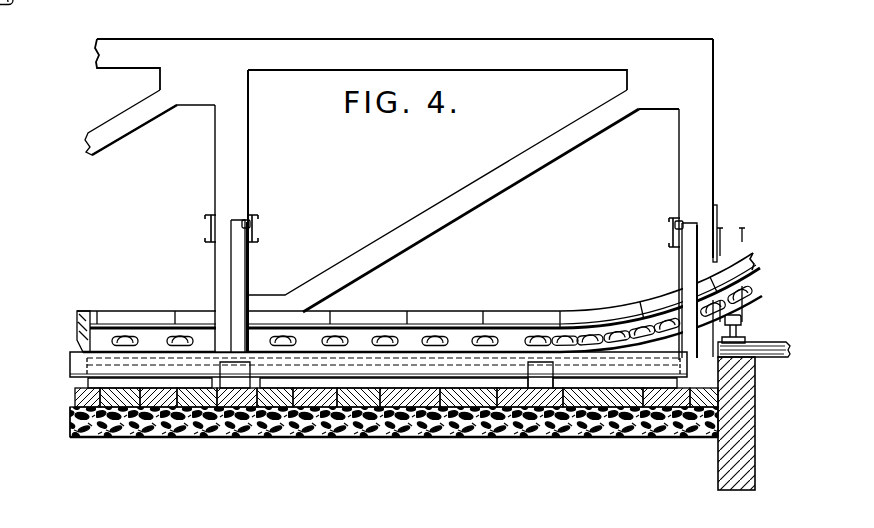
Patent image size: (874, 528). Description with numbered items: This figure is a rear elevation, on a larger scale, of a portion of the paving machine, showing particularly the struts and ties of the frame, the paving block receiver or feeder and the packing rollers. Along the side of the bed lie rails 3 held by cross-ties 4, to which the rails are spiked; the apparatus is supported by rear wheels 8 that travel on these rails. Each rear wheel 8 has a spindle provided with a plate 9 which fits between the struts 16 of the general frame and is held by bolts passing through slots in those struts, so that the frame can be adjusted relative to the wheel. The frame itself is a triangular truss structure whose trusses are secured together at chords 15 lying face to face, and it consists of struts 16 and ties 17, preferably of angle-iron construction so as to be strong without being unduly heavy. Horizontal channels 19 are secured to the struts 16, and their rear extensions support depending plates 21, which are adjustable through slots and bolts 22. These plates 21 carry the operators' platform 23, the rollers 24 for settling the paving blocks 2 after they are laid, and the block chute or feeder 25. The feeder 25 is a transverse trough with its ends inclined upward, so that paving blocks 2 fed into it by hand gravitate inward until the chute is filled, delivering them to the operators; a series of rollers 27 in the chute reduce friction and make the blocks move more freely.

The paving blocks 2 is at (118, 318).
The rails 3 is at (738, 330).
The cross-ties 4 is at (770, 340).
The rear wheels 8 is at (745, 232).
The plate 9 is at (717, 215).
The chords 15 is at (385, 42).
The struts 16 is at (237, 147).
The ties 17 is at (103, 125).
The horizontal channels 19 is at (205, 228).
The depending plates 21 is at (248, 272).
The slots and bolts 22 is at (250, 222).
The operators' platform 23 is at (70, 363).
The rollers 24 is at (130, 382).
The block chute or feeder 25 is at (150, 337).
The rollers 27 is at (125, 338).